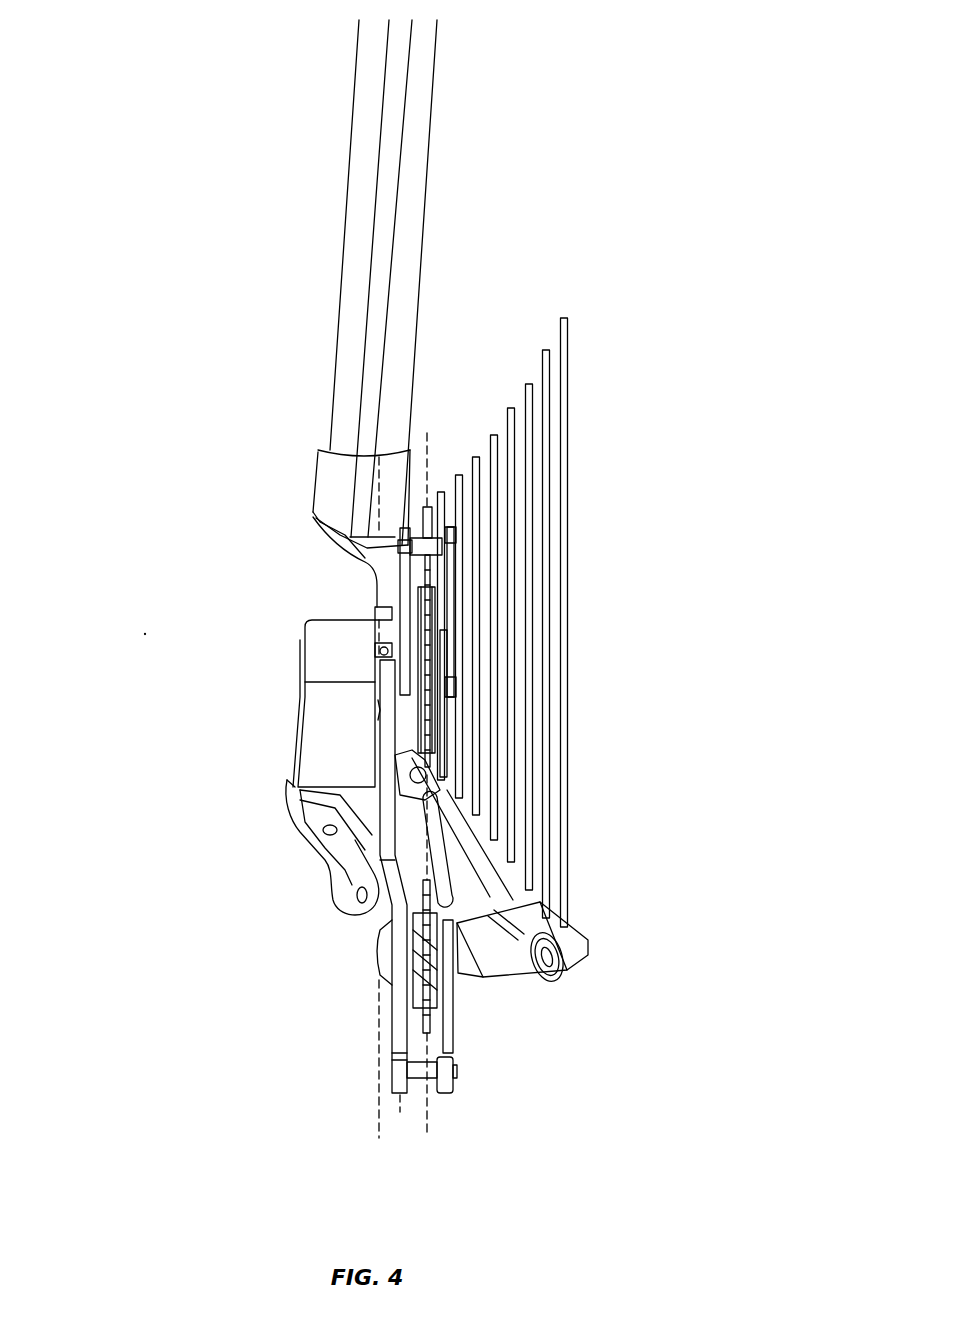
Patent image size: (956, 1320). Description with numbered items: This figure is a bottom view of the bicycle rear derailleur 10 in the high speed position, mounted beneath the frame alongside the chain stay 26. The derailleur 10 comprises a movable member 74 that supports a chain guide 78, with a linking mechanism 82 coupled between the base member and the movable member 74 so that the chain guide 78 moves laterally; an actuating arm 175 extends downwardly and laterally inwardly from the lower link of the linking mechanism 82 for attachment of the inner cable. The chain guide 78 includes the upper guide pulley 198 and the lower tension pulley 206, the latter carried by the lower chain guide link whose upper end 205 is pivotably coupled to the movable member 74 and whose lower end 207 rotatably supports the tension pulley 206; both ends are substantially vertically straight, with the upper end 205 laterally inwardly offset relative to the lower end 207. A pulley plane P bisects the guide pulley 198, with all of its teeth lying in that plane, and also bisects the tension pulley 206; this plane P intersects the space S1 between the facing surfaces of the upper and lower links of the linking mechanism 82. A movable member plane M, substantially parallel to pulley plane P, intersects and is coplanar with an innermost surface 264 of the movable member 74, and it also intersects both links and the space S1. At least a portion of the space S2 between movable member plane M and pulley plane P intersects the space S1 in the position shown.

The derailleur 10 is at (140, 632).
The chain stay 26 is at (355, 240).
The movable member 74 is at (280, 660).
The chain guide 78 is at (365, 1062).
The linking mechanism 82 is at (295, 860).
The actuating arm 175 is at (590, 950).
The guide pulley 198 is at (428, 610).
The upper end of lower chain guide link 205 is at (385, 808).
The tension pulley 206 is at (427, 1020).
The lower end of lower chain guide link 207 is at (400, 1027).
The innermost surface 264 is at (378, 708).
The space between facing surfaces of upper link and lower link S1 is at (440, 888).
The space between movable member plane and pulley plane S2 is at (400, 1115).
The pulley plane P is at (430, 462).
The movable member plane M is at (380, 1110).